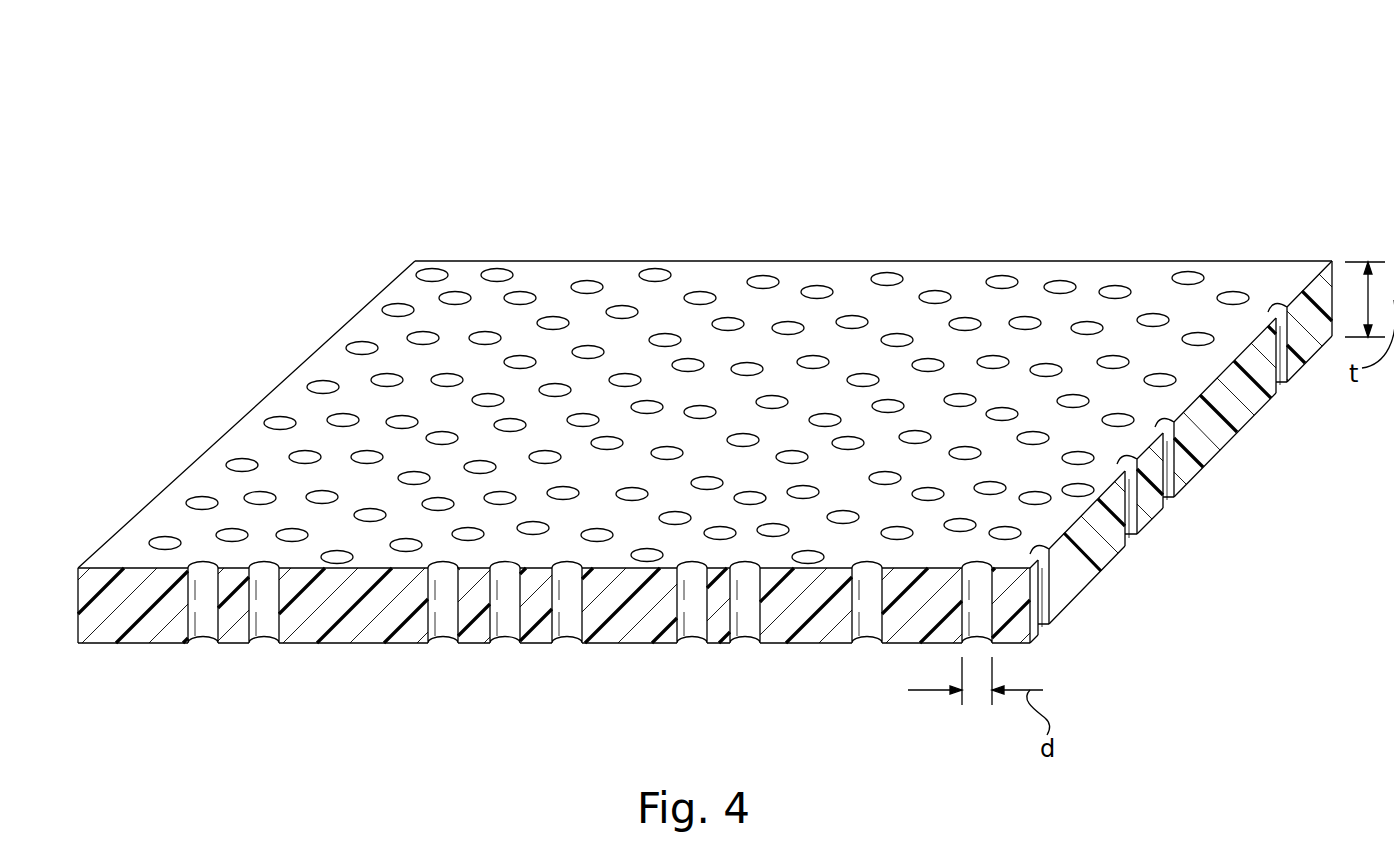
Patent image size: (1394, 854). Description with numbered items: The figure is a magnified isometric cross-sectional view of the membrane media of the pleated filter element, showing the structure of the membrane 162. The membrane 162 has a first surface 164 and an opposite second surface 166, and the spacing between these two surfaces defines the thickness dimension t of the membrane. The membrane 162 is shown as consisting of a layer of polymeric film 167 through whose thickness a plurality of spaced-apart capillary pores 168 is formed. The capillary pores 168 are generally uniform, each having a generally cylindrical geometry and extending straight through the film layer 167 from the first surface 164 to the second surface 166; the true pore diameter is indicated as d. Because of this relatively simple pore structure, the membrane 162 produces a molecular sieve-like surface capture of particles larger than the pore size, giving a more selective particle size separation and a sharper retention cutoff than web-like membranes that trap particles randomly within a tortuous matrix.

The membrane 162 is at (1222, 128).
The first surface 164 is at (462, 274).
The second surface 166 is at (137, 644).
The polymeric film layer 167 is at (1205, 261).
The capillary pore 168 is at (995, 557).